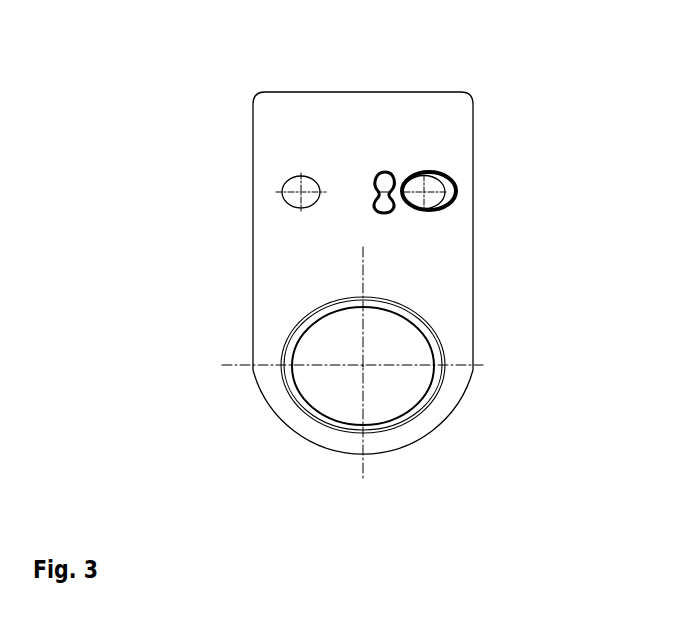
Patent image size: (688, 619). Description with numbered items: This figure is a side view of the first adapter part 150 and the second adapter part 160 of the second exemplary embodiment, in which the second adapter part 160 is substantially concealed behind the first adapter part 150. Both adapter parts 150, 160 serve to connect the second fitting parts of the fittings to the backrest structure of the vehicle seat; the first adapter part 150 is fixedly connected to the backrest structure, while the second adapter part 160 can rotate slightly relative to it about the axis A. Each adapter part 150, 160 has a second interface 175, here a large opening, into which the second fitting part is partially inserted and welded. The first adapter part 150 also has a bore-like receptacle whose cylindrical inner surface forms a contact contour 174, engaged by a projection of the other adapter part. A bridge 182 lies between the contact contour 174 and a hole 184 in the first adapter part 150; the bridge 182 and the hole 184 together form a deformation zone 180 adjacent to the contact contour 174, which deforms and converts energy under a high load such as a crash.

The first adapter part 150 is at (293, 150).
The second adapter part 160 is at (432, 187).
The contact contour 174 is at (404, 212).
The second interface 175 is at (323, 387).
The deformation zone 180 is at (405, 178).
The bridge 182 is at (391, 173).
The hole 184 is at (382, 194).
The axis A is at (363, 366).